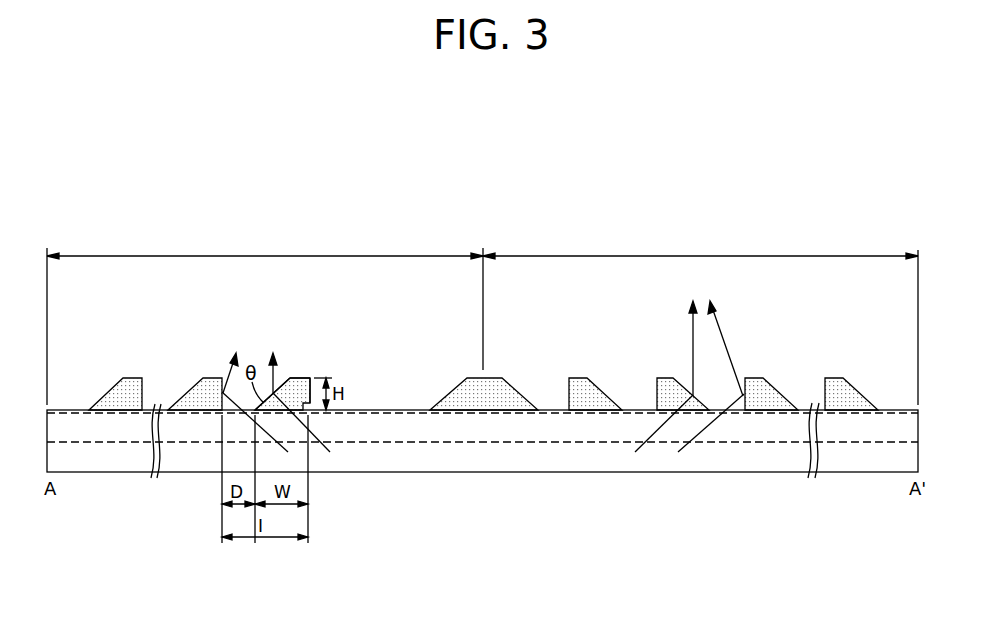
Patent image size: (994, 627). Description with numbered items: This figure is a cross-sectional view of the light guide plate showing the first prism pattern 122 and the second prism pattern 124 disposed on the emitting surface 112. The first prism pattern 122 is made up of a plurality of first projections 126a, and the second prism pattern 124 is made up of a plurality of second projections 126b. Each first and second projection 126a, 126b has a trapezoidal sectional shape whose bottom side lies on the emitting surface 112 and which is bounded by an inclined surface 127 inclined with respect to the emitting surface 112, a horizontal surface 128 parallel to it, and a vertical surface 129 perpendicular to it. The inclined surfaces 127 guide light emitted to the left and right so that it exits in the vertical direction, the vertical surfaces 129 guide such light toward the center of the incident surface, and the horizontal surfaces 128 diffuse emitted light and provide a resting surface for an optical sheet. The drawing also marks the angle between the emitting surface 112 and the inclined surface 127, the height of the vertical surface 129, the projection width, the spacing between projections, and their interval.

The emitting surface 112 is at (373, 413).
The first prism pattern 122 is at (292, 322).
The second prism pattern 124 is at (700, 322).
The first projection 126a is at (300, 390).
The second projection 126b is at (666, 392).
The inclined surface 127 is at (288, 378).
The horizontal surface 128 is at (289, 377).
The vertical surface 129 is at (311, 387).